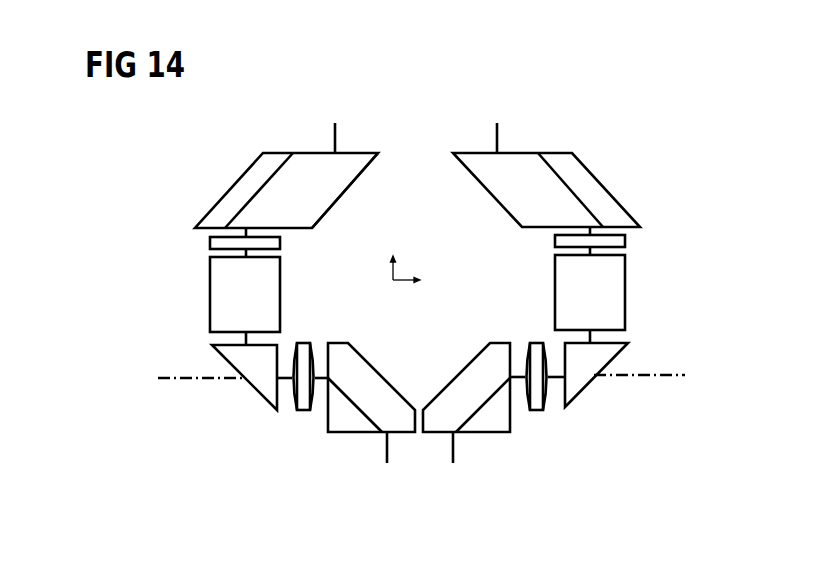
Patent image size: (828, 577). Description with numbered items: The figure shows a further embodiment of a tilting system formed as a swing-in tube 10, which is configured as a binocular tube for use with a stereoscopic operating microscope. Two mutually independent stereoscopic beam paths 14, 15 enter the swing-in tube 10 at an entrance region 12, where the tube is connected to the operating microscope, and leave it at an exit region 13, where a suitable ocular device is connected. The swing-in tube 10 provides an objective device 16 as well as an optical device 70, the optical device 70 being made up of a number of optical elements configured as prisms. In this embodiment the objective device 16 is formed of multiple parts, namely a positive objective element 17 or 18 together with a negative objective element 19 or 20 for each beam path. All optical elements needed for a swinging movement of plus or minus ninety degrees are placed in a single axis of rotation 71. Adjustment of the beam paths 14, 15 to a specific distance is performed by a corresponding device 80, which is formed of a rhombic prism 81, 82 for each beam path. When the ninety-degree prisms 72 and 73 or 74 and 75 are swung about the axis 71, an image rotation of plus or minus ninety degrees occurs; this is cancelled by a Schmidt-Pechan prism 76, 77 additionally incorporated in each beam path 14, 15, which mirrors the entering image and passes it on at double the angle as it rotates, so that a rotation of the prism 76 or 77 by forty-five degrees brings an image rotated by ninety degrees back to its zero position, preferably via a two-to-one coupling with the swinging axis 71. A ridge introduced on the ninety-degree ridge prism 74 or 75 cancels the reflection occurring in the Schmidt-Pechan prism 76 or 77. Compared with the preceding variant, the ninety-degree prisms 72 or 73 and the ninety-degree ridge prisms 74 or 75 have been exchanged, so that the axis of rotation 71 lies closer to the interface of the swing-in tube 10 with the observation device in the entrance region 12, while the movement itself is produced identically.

The swing-in tube 10 is at (147, 178).
The entrance region 12 is at (414, 475).
The exit region 13 is at (414, 118).
The beam path 14 is at (335, 142).
The beam path 15 is at (497, 142).
The objective device 16 is at (193, 241).
The positive objective element 17 is at (303, 343).
The positive objective element 18 is at (533, 343).
The negative objective element 19 is at (280, 243).
The negative objective element 20 is at (555, 243).
The optical device 70 is at (180, 300).
The axis of rotation 71 is at (670, 376).
The 90° prism 72 is at (258, 391).
The 90° prism 73 is at (590, 390).
The 90° ridge prism 74 is at (350, 356).
The 90° ridge prism 75 is at (490, 354).
The Schmidt-Pechan prism 76 is at (218, 278).
The Schmidt-Pechan prism 77 is at (618, 285).
The device 80 is at (221, 166).
The rhombic prism 81 is at (336, 177).
The rhombic prism 82 is at (499, 177).